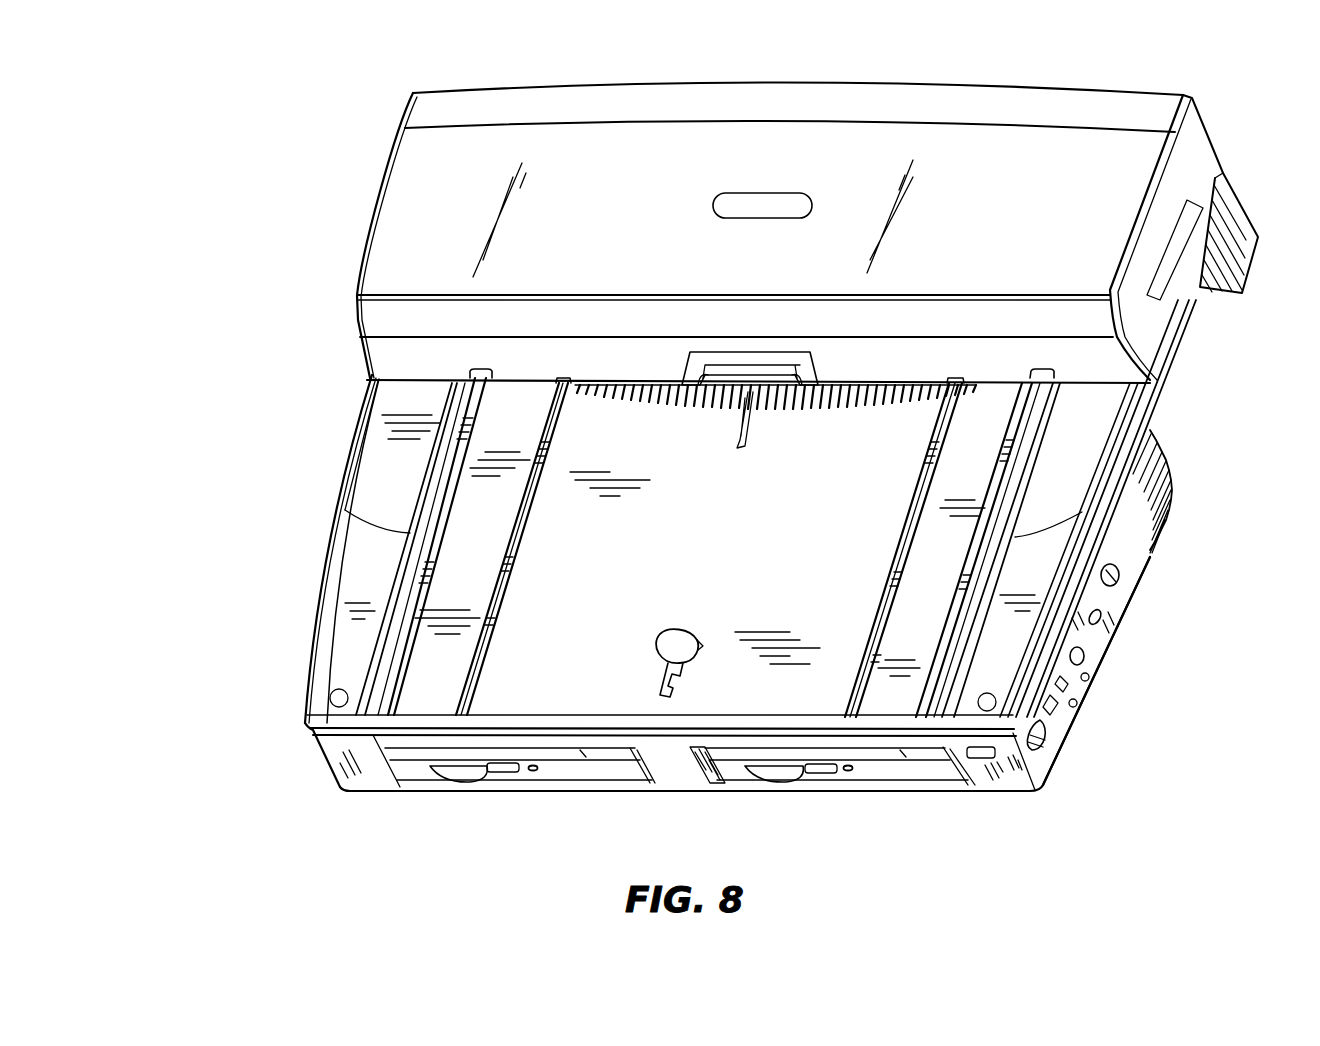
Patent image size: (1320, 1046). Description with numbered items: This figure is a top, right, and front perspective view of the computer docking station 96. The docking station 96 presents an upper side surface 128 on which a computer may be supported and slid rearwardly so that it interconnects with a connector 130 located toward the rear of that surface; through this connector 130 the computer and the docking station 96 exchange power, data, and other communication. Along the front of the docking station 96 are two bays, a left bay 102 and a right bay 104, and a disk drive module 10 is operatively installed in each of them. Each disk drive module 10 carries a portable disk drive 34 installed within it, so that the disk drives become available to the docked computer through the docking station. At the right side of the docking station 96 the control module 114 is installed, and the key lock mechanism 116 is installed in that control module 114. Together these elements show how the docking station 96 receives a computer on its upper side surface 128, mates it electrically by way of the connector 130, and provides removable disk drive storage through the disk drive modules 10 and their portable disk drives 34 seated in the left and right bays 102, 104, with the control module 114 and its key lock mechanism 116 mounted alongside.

The docking station 96 is at (303, 142).
The connector 130 is at (766, 385).
The upper side surface 128 is at (692, 538).
The left bay 102 is at (492, 750).
The right bay 104 is at (754, 749).
The disk drive module 10 is at (570, 762).
The portable disk drive 34 is at (589, 750).
The key lock mechanism 116 is at (1117, 578).
The control module 114 is at (1068, 728).